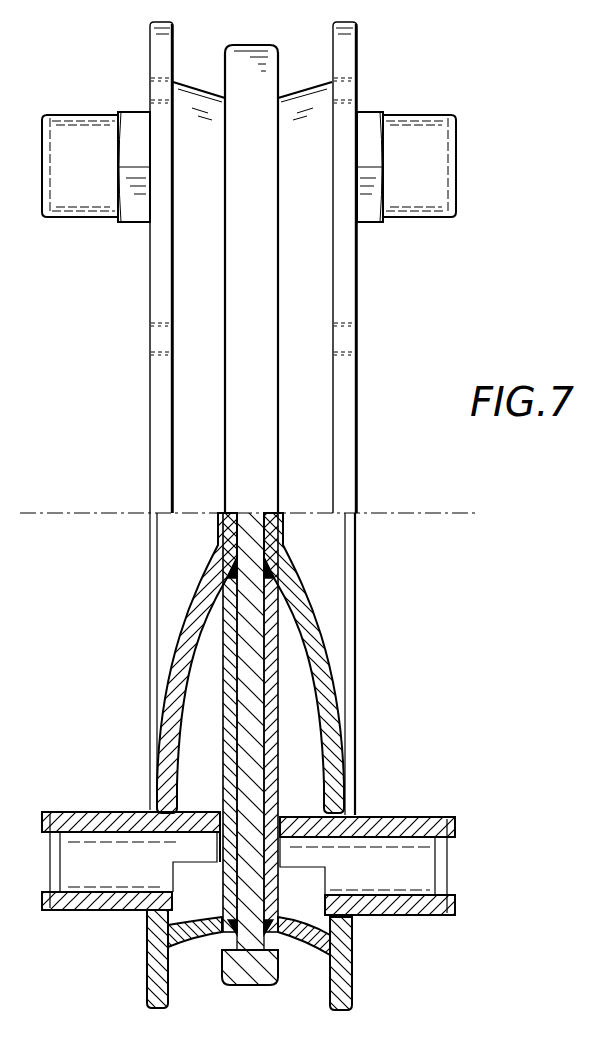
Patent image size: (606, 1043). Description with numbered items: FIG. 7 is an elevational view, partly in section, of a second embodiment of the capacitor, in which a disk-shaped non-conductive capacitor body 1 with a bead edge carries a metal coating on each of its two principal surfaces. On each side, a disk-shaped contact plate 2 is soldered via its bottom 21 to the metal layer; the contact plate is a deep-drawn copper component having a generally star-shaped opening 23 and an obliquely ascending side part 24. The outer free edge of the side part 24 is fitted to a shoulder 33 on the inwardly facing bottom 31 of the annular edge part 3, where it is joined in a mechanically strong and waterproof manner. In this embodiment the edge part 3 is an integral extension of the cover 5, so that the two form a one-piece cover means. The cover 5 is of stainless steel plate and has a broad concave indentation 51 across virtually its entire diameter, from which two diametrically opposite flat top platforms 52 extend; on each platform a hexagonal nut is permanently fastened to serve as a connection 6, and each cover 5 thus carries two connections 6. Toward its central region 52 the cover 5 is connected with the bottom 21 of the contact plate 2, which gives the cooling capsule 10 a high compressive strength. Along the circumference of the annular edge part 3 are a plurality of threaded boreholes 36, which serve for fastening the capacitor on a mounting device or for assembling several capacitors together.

The capacitor body 1 is at (258, 161).
The contact plate 2 is at (202, 222).
The bottom 21 is at (225, 790).
The opening 23 is at (302, 592).
The edge part 3 is at (147, 946).
The bottom of the annular edge part 31 is at (150, 977).
The shoulder 33 is at (350, 927).
The threaded boreholes 36 is at (150, 87).
The cover 5 is at (186, 652).
The concave indentation 51 is at (175, 563).
The top platform 52 is at (226, 530).
The connection 6 is at (88, 163).
The cooling capsule 10 is at (146, 263).
The side part 24 is at (200, 936).